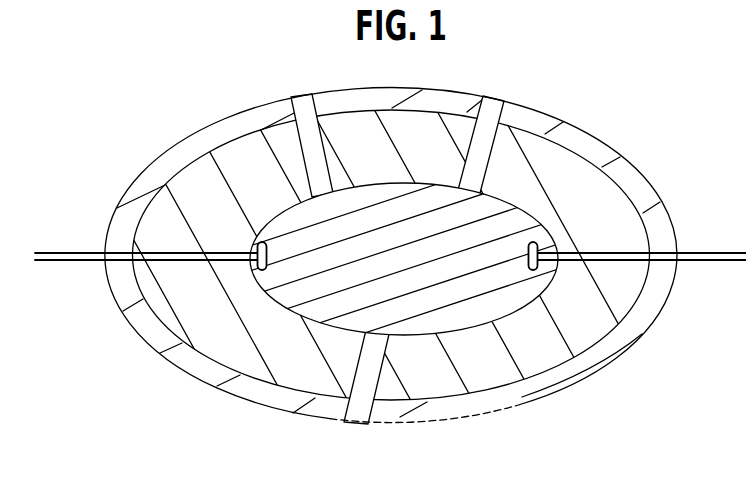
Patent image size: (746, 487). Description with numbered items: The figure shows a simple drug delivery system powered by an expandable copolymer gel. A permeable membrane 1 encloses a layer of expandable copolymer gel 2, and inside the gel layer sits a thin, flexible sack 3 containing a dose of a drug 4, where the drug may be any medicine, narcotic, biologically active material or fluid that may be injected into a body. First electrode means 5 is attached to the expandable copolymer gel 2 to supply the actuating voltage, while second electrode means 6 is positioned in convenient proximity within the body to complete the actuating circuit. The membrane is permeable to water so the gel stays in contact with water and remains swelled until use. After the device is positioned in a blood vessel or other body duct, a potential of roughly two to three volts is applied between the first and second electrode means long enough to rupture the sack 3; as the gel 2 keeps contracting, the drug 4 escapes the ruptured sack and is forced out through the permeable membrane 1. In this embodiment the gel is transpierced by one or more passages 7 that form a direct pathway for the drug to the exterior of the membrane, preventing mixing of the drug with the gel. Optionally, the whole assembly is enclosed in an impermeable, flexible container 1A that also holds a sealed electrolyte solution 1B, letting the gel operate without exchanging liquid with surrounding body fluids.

The permeable membrane 1 is at (395, 263).
The impermeable flexible container 1A is at (641, 336).
The sealed electrolyte solution 1B is at (480, 405).
The expandable copolymer gel 2 is at (551, 360).
The flexible sack 3 is at (370, 246).
The drug 4 is at (320, 303).
The first electrode means 5 is at (733, 250).
The second electrode means 6 is at (70, 250).
The passages 7 is at (307, 142).